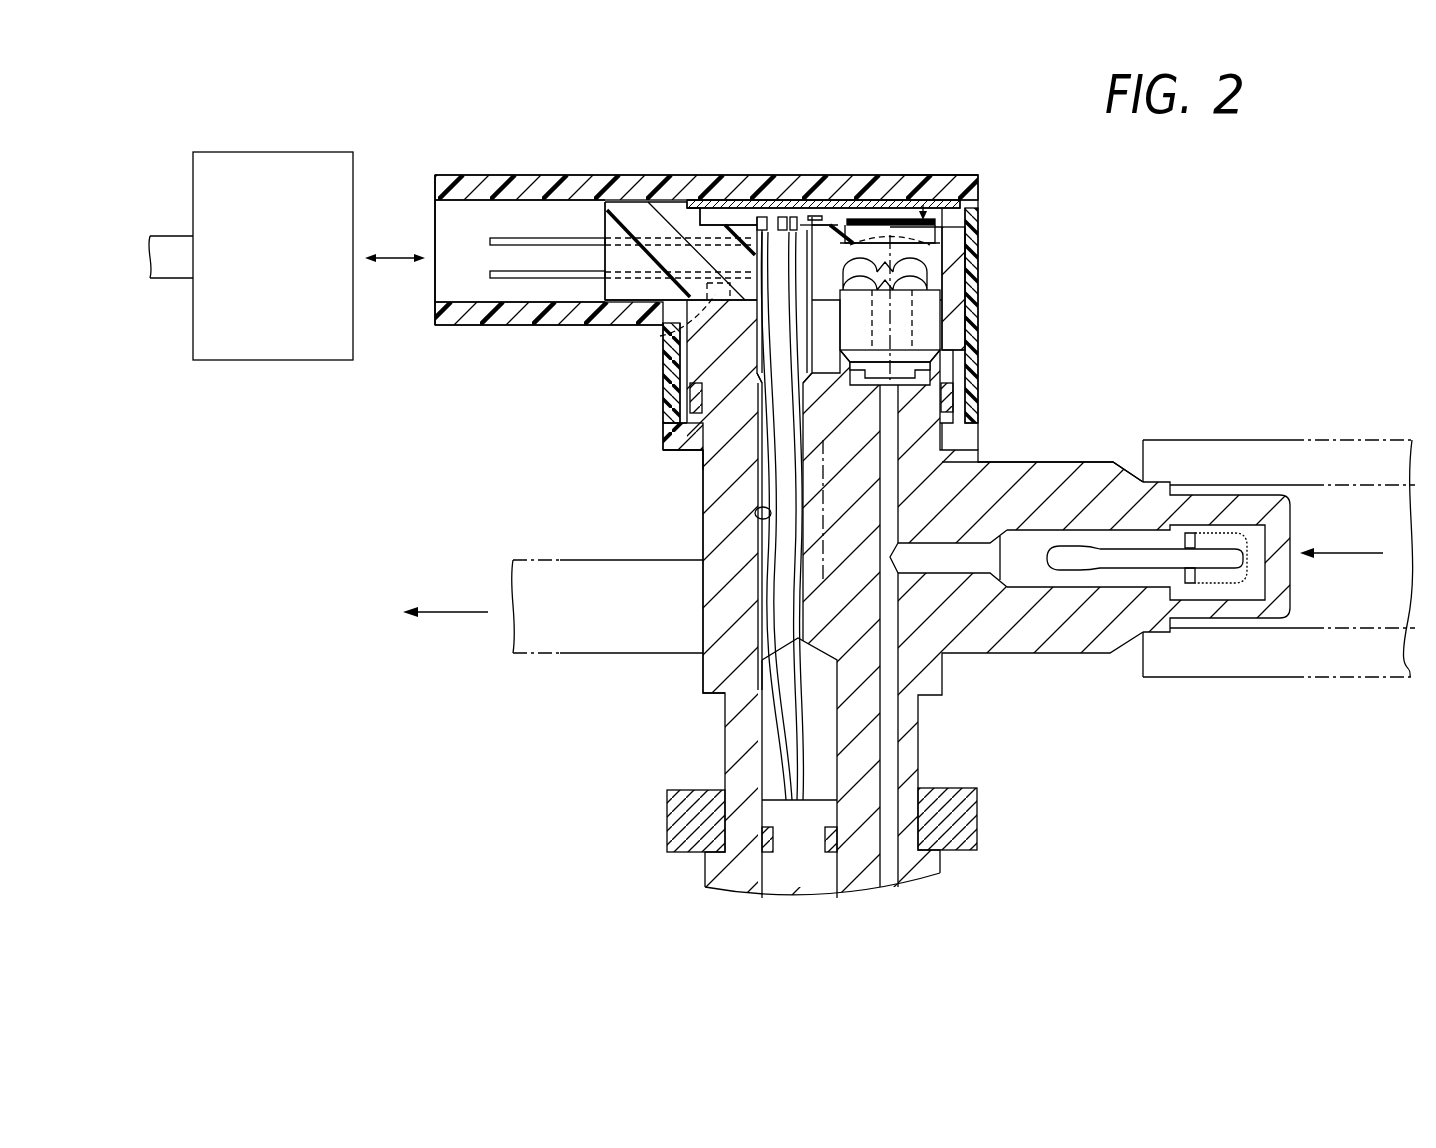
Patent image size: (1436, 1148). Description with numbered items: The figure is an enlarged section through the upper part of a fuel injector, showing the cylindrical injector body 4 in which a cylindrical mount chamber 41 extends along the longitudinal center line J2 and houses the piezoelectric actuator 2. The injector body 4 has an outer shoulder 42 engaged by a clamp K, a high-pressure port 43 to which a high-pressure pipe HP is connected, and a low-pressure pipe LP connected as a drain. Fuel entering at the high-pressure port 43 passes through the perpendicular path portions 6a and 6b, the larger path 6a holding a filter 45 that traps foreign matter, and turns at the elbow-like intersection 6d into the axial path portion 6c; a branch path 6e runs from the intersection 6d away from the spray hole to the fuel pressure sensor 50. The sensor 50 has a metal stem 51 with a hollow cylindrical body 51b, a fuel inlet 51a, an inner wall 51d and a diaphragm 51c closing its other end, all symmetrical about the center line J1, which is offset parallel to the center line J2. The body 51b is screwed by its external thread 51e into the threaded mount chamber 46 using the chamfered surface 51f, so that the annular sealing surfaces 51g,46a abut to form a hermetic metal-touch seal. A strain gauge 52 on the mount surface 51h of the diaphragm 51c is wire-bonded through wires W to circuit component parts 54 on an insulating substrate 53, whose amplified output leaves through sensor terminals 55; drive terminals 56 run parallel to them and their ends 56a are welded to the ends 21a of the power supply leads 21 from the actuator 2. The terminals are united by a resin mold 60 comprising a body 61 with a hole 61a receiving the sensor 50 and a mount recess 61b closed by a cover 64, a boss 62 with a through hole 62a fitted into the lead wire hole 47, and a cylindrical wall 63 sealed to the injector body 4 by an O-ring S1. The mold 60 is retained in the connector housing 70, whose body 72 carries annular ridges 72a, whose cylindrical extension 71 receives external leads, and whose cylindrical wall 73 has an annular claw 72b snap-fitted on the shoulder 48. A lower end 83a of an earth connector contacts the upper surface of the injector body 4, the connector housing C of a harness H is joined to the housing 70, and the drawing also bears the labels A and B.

The piezoelectric actuator 2 is at (808, 872).
The injector body 4 is at (708, 680).
The high-pressure path portion 6a is at (1030, 577).
The high-pressure path portion 6b is at (965, 575).
The high-pressure path portion 6c is at (890, 750).
The intersection 6d is at (1040, 535).
The branch path 6e is at (958, 472).
The power supply leads 21 is at (798, 736).
The ends of lead wires 21a is at (777, 177).
The mount chamber 41 is at (765, 875).
The outer shoulder 42 is at (690, 850).
The high-pressure port 43 is at (1073, 595).
The filter 45 is at (1120, 570).
The mount chamber 46 is at (930, 333).
The lead wire hole 47 is at (770, 517).
The shoulder 48 is at (670, 450).
The fuel pressure sensor 50 is at (937, 177).
The stem 51 is at (945, 332).
The fuel inlet 51a is at (955, 395).
The cylindrical body 51b is at (960, 302).
The diaphragm 51c is at (978, 200).
The inner wall 51d is at (978, 262).
The external thread 51e is at (950, 330).
The chamfered surface 51f is at (978, 242).
The annular sealing surfaces 51g,46a is at (935, 362).
The mount surface 51h is at (918, 177).
The strain gauge 52 is at (888, 177).
The insulating substrate 53 is at (838, 177).
The circuit component parts 54 is at (815, 177).
The sensor terminals 55 is at (492, 280).
The drive terminals 56 is at (514, 238).
The ends of drive terminals 56a is at (760, 177).
The resin mold 60 is at (632, 264).
The body 61 is at (660, 287).
The hole 61a is at (920, 298).
The mount recess 61b is at (694, 177).
The boss 62 is at (690, 365).
The through hole 62a is at (745, 458).
The cylindrical wall 63 is at (688, 398).
The cover 64 is at (722, 175).
The connector housing 70 is at (434, 334).
The cylindrical extension 71 is at (468, 325).
The body 72 is at (645, 175).
The annular ridges 72a is at (607, 175).
The annular claw 72b is at (672, 438).
The cylindrical wall 73 is at (672, 350).
The lower end of earth connector 83a is at (660, 336).
The direction A is at (733, 112).
The direction B is at (480, 258).
The connector housing C is at (253, 362).
The harness H is at (170, 280).
The clamp K is at (686, 820).
The O-ring S1 is at (683, 415).
The longitudinal center line J1 is at (888, 512).
The longitudinal center line J2 is at (881, 440).
The low-pressure pipe LP is at (530, 656).
The high-pressure pipe HP is at (1372, 680).
The wires W is at (860, 177).